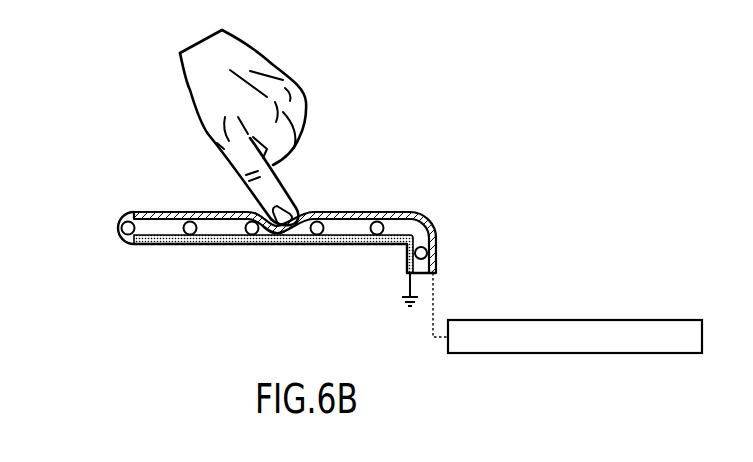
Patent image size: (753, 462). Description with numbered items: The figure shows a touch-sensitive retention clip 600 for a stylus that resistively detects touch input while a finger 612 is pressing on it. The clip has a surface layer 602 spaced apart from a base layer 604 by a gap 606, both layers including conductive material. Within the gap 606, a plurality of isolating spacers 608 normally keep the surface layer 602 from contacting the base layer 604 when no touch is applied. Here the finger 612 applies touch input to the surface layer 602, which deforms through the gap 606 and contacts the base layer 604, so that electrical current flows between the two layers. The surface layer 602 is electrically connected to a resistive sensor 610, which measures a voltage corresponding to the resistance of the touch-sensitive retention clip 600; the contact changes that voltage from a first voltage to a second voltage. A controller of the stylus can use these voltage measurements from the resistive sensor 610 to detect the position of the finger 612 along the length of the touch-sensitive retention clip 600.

The touch-sensitive retention clip 600 is at (121, 158).
The surface layer 602 is at (355, 215).
The base layer 604 is at (279, 244).
The gap 606 is at (152, 227).
The isolating spacers 608 is at (195, 238).
The resistive sensor 610 is at (552, 313).
The finger 612 is at (192, 46).